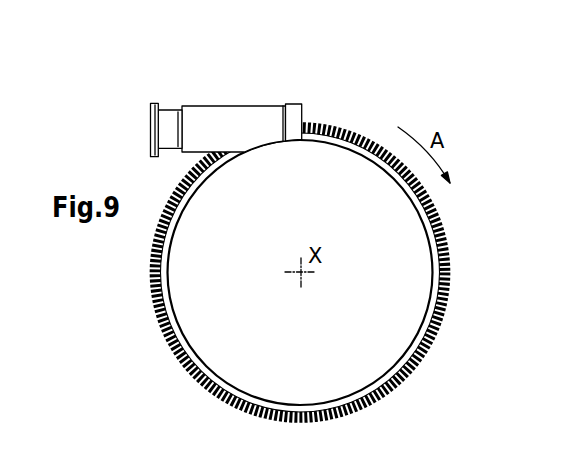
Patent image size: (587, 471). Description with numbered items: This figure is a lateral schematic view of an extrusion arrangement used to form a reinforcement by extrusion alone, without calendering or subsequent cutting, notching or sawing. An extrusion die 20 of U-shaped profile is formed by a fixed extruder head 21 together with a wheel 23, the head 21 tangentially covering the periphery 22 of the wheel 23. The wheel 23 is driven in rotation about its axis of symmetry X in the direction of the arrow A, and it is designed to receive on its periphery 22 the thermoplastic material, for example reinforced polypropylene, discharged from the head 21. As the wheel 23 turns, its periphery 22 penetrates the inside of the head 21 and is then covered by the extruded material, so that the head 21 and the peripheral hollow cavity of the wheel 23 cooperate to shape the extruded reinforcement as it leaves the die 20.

The extrusion die 20 is at (309, 114).
The extruder head 21 is at (217, 97).
The periphery 22 is at (352, 132).
The wheel 23 is at (265, 220).